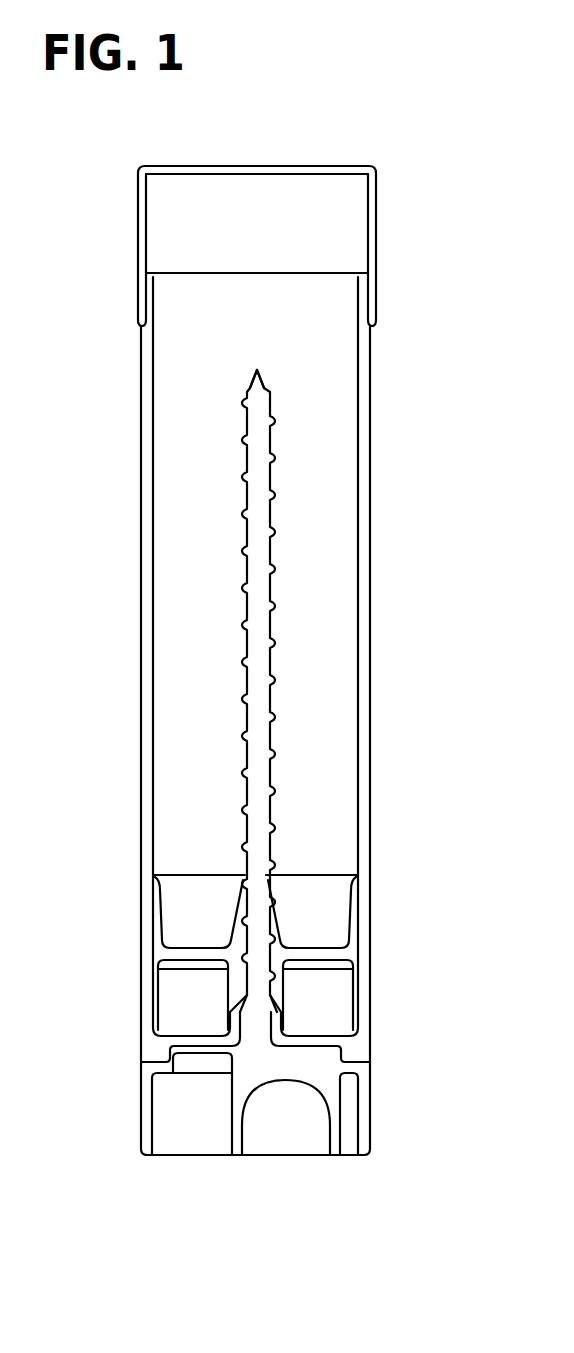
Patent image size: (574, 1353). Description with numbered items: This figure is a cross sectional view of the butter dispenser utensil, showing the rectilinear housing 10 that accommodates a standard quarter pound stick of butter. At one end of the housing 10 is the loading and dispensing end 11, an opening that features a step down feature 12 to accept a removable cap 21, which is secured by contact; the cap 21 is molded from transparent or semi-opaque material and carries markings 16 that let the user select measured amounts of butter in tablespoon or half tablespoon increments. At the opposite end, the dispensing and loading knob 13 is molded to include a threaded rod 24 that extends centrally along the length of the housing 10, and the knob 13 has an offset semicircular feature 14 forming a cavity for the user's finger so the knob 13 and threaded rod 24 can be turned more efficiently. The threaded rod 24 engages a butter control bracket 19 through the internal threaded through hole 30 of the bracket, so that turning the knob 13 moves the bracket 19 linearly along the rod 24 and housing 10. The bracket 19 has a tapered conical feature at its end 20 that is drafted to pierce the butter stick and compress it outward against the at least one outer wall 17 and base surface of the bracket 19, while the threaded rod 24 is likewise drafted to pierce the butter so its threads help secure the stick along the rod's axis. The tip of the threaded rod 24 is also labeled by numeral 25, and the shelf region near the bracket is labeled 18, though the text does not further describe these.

The housing 10 is at (337, 515).
The loading and dispensing end 11 is at (318, 275).
The step down feature 12 is at (380, 306).
The dispensing and loading knob 13 is at (364, 1085).
The semicircular feature 14 is at (303, 1133).
The markings 16 is at (137, 198).
The outer wall of the bracket 17 is at (303, 924).
The shelf 18 is at (287, 883).
The butter control bracket 19 is at (323, 945).
The tapered conical feature 20 is at (278, 897).
The cap 21 is at (280, 225).
The threaded rod 24 is at (244, 552).
The screw tip 25 is at (254, 382).
The internal threaded through hole 30 is at (268, 898).